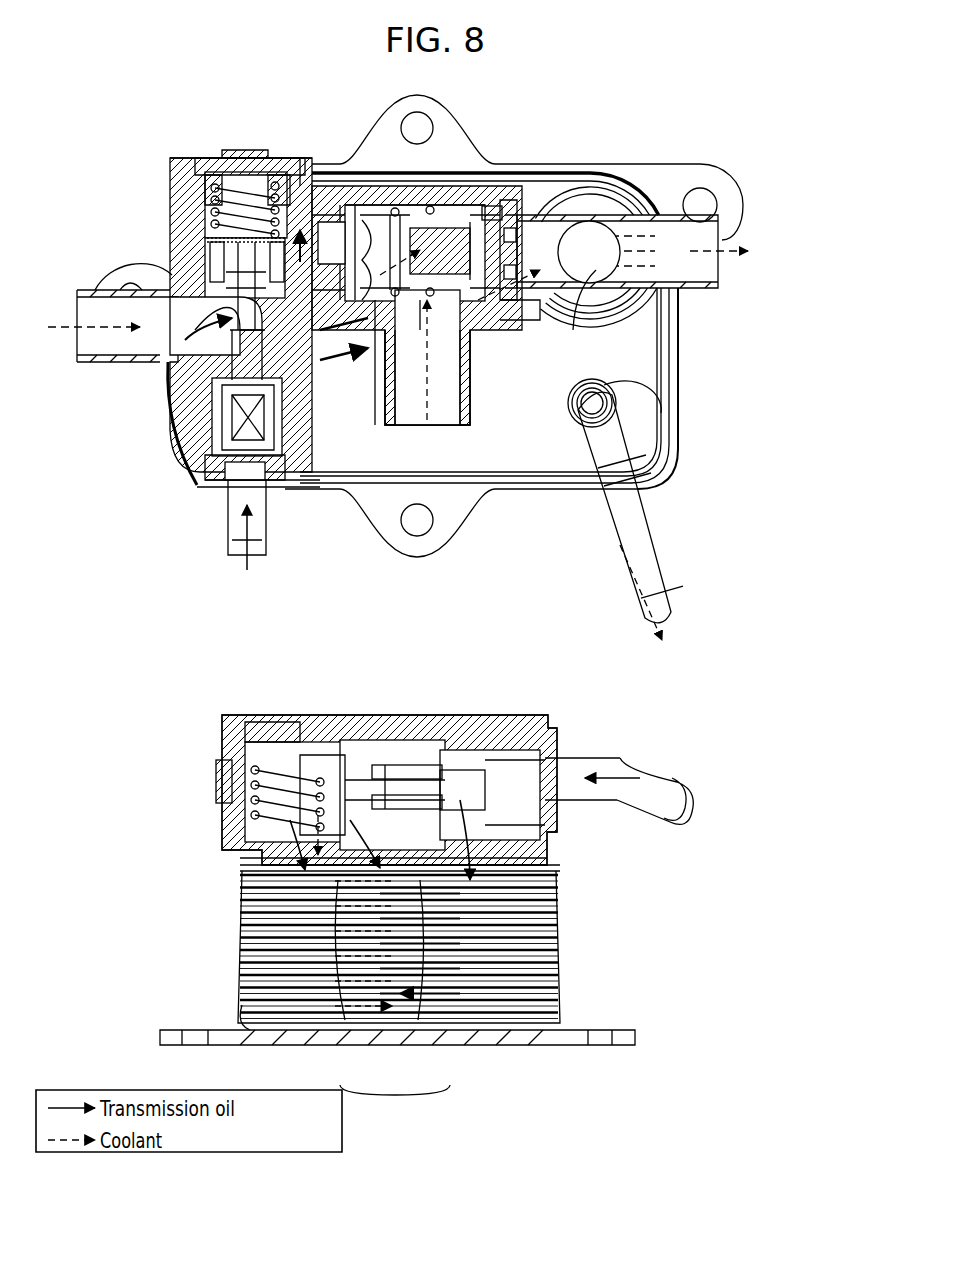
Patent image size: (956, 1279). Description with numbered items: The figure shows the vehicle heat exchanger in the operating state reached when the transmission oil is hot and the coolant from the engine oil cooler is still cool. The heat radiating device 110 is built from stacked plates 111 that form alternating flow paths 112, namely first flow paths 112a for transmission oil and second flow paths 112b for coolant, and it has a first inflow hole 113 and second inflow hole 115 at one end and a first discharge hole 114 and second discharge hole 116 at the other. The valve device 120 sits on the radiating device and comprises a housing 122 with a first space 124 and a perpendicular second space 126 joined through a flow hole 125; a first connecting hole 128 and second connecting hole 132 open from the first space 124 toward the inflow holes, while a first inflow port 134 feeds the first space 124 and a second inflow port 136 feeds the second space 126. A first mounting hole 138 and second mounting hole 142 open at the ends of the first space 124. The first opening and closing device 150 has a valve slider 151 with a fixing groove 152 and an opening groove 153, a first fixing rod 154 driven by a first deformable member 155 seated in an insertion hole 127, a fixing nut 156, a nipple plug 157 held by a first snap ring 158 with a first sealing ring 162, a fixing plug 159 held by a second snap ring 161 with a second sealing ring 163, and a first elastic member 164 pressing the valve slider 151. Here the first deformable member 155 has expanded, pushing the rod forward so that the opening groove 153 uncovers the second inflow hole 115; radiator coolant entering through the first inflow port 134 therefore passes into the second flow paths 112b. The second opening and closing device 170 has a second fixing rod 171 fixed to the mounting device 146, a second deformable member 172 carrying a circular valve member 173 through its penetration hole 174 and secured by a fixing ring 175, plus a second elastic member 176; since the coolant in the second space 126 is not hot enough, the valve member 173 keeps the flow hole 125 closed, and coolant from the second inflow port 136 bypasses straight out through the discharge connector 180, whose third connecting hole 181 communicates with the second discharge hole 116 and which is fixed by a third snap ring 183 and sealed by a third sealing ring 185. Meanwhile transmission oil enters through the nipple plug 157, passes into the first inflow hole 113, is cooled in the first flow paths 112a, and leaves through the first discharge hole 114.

The heat radiating device 110 is at (683, 350).
The plates 111 is at (675, 393).
The flow paths 112 is at (399, 995).
The first flow path 112a is at (350, 885).
The second flow path 112b is at (425, 890).
The first inflow hole 113 is at (550, 872).
The first discharge hole 114 is at (262, 150).
The second inflow hole 115 is at (680, 440).
The second discharge hole 116 is at (613, 170).
The valve device 120 is at (390, 665).
The housing 122 is at (380, 190).
The first space 124 is at (336, 332).
The flow hole 125 is at (300, 158).
The second space 126 is at (412, 203).
The insertion hole 127 is at (430, 765).
The first connecting hole 128 is at (330, 420).
The second connecting hole 132 is at (175, 300).
The first inflow port 134 is at (90, 290).
The second inflow port 136 is at (472, 395).
The first mounting hole 138 is at (547, 777).
The second mounting hole 142 is at (216, 778).
The mounting device 146 is at (330, 300).
The first opening and closing device 150 is at (215, 365).
The valve slider 151 is at (235, 270).
The fixing groove 152 is at (240, 250).
The opening groove 153 is at (222, 255).
The first fixing rod 154 is at (222, 348).
The first deformable member 155 is at (178, 430).
The fixing nut 156 is at (220, 400).
The nipple plug 157 is at (262, 505).
The first snap ring 158 is at (275, 490).
The fixing plug 159 is at (245, 158).
The second snap ring 161 is at (280, 175).
The first sealing ring 162 is at (300, 476).
The second sealing ring 163 is at (250, 722).
The first elastic member 164 is at (215, 170).
The second opening and closing device 170 is at (440, 228).
The second fixing rod 171 is at (320, 205).
The second deformable member 172 is at (512, 305).
The valve member 173 is at (438, 350).
The penetration hole 174 is at (352, 205).
The fixing ring 175 is at (378, 340).
The second elastic member 176 is at (440, 215).
The discharge connector 180 is at (673, 215).
The third connecting hole 181 is at (589, 288).
The third snap ring 183 is at (515, 210).
The third sealing ring 185 is at (490, 206).